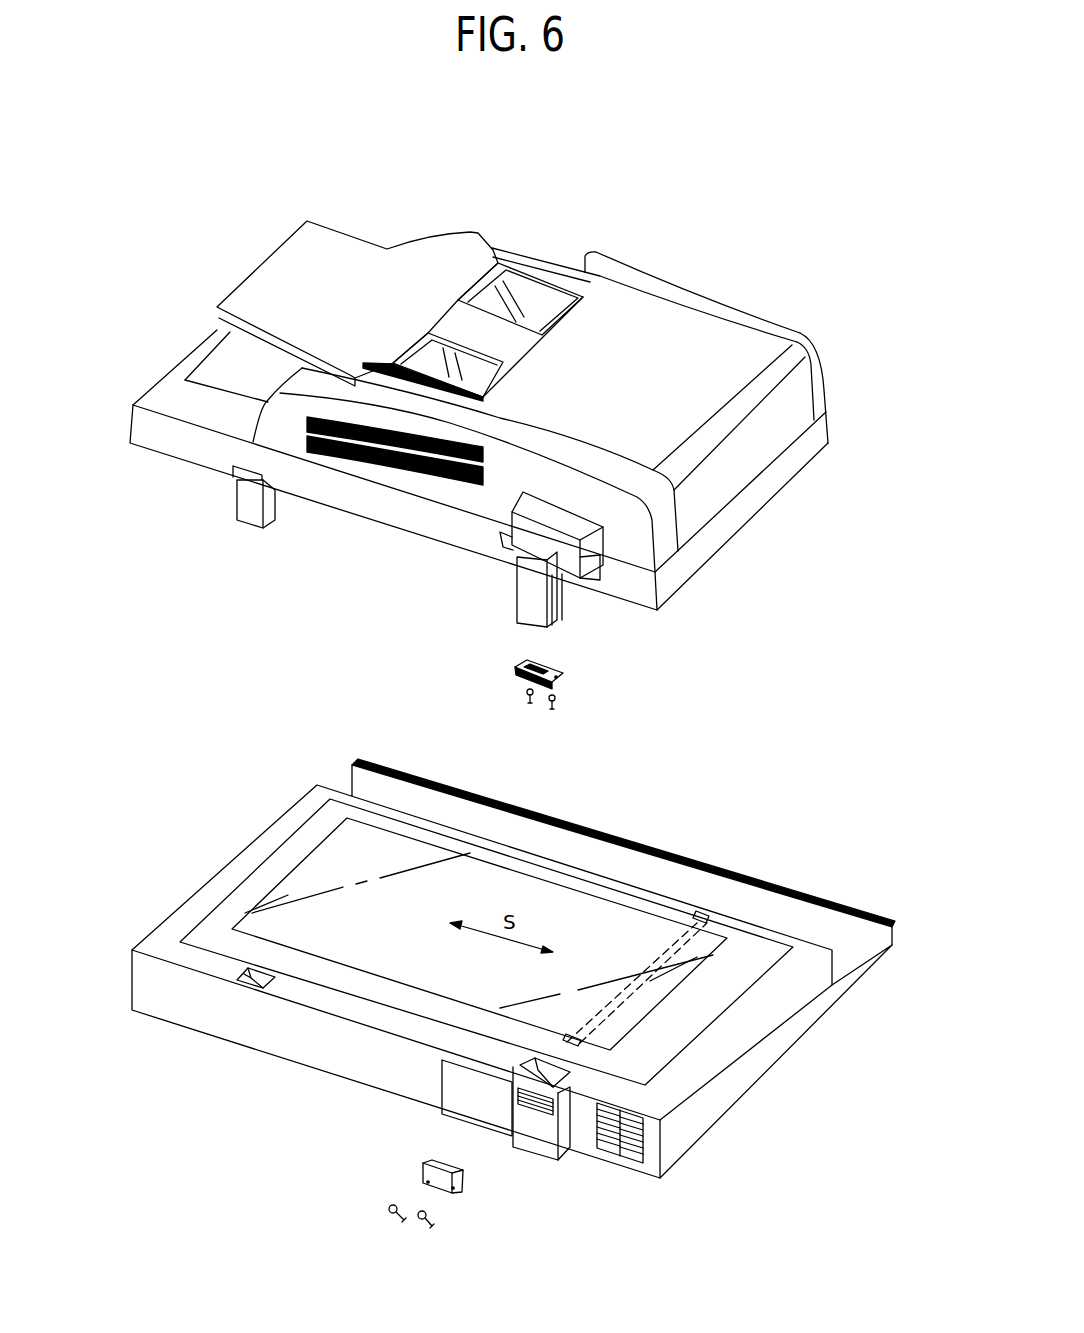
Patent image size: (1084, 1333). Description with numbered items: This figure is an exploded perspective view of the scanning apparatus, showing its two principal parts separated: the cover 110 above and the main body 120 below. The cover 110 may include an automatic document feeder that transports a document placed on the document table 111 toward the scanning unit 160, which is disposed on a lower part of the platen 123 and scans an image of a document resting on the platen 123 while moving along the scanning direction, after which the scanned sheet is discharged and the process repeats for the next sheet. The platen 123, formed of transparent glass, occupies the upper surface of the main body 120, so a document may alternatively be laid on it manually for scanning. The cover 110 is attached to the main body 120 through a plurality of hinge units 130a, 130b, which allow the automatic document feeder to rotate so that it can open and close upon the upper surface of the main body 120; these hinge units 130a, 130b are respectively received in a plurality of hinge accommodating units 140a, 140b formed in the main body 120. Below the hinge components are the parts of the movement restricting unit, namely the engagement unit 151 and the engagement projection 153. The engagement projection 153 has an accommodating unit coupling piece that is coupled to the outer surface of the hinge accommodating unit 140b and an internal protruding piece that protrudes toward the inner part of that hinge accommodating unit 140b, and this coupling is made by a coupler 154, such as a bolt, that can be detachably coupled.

The cover 110 is at (713, 315).
The document table 111 is at (428, 293).
The main body 120 is at (783, 1047).
The platen 123 is at (337, 864).
The hinge unit 130a is at (253, 521).
The hinge unit 130b is at (525, 612).
The hinge accommodating unit 140a is at (258, 981).
The hinge accommodating unit 140b is at (543, 1078).
The engagement unit 151 is at (563, 672).
The engagement projection 153 is at (422, 1167).
The coupler 154 is at (552, 709).
The scanning unit 160 is at (700, 920).